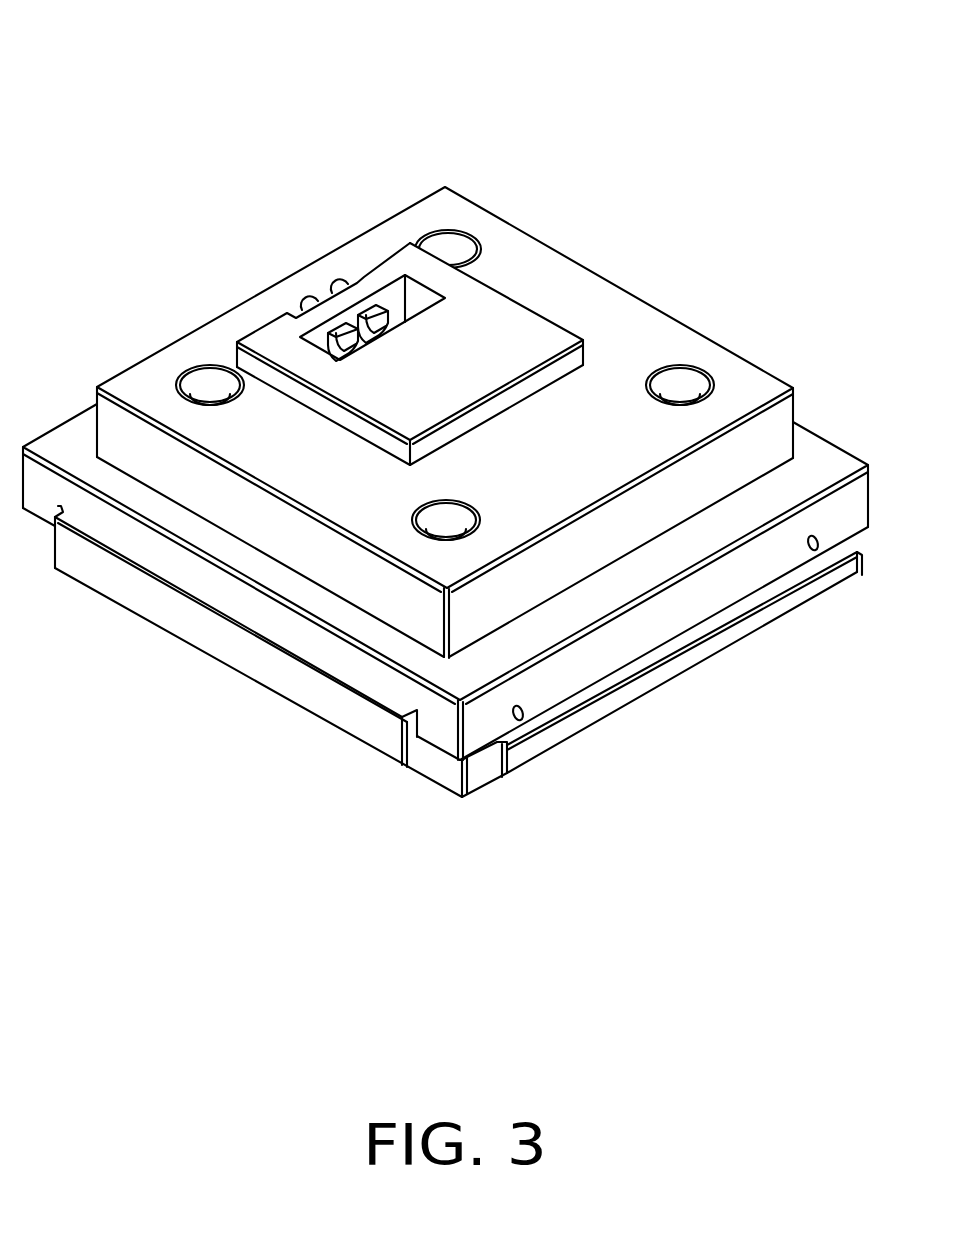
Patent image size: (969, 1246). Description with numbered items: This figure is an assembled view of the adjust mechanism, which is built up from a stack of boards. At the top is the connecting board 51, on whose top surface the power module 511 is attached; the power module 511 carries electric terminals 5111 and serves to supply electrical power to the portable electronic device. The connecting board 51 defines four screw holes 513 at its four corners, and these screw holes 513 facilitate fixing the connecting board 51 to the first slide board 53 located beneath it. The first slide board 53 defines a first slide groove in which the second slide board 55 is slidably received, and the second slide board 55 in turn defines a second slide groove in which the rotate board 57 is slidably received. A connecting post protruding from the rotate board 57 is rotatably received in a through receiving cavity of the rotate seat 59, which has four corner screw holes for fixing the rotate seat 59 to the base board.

The connecting board 51 is at (627, 333).
The power module 511 is at (507, 330).
The electric terminals 5111 is at (387, 313).
The screw holes 513 is at (205, 385).
The first slide board 53 is at (822, 460).
The second slide board 55 is at (280, 670).
The rotate board 57 is at (620, 700).
The rotate seat 59 is at (477, 770).